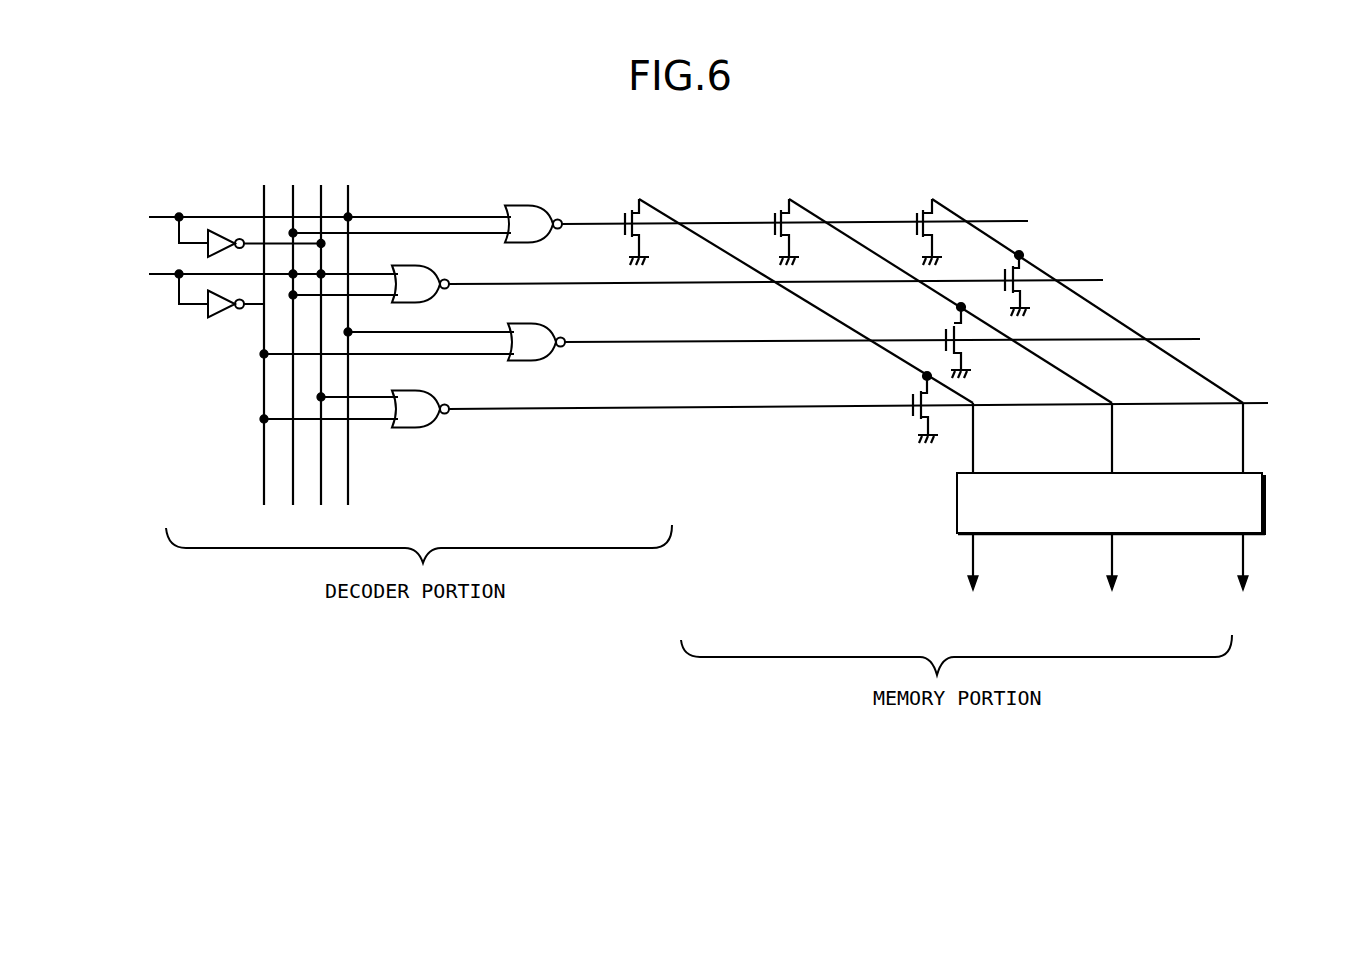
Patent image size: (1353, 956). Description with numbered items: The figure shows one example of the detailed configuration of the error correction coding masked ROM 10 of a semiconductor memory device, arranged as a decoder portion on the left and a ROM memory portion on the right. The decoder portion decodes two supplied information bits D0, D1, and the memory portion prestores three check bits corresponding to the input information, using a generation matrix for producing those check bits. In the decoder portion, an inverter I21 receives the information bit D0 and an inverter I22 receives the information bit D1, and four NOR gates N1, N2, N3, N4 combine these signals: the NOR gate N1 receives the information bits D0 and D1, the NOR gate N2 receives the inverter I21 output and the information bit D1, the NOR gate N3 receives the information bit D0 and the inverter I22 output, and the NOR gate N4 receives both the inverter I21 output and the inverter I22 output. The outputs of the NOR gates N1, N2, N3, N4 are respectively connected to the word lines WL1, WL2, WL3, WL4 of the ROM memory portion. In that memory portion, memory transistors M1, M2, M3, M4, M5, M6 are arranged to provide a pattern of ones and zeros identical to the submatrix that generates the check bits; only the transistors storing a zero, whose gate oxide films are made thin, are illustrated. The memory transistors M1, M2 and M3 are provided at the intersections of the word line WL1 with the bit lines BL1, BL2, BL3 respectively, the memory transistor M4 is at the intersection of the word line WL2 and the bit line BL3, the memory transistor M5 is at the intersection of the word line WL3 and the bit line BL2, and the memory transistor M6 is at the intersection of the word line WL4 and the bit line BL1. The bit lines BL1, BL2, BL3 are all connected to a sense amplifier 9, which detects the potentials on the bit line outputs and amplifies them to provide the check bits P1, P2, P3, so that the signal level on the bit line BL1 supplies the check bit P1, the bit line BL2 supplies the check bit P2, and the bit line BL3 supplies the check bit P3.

The error correction coding masked ROM 10 is at (1149, 135).
The sense amplifier 9 is at (957, 507).
The inverter I21 is at (252, 246).
The inverter I22 is at (237, 322).
The NOR gate N1 is at (522, 199).
The NOR gate N2 is at (425, 266).
The NOR gate N3 is at (545, 326).
The NOR gate N4 is at (428, 391).
The memory transistor M1 is at (664, 194).
The memory transistor M2 is at (812, 194).
The memory transistor M3 is at (960, 194).
The memory transistor M4 is at (1030, 283).
The memory transistor M5 is at (963, 350).
The memory transistor M6 is at (920, 427).
The word line WL1 is at (821, 221).
The word line WL2 is at (801, 280).
The word line WL3 is at (909, 339).
The word line WL4 is at (882, 404).
The bit line BL1 is at (977, 433).
The bit line BL2 is at (1117, 433).
The bit line BL3 is at (1243, 438).
The check bit P1 is at (974, 577).
The check bit P2 is at (1112, 577).
The check bit P3 is at (1242, 577).
The information bit D0 is at (309, 219).
The information bit D1 is at (253, 276).